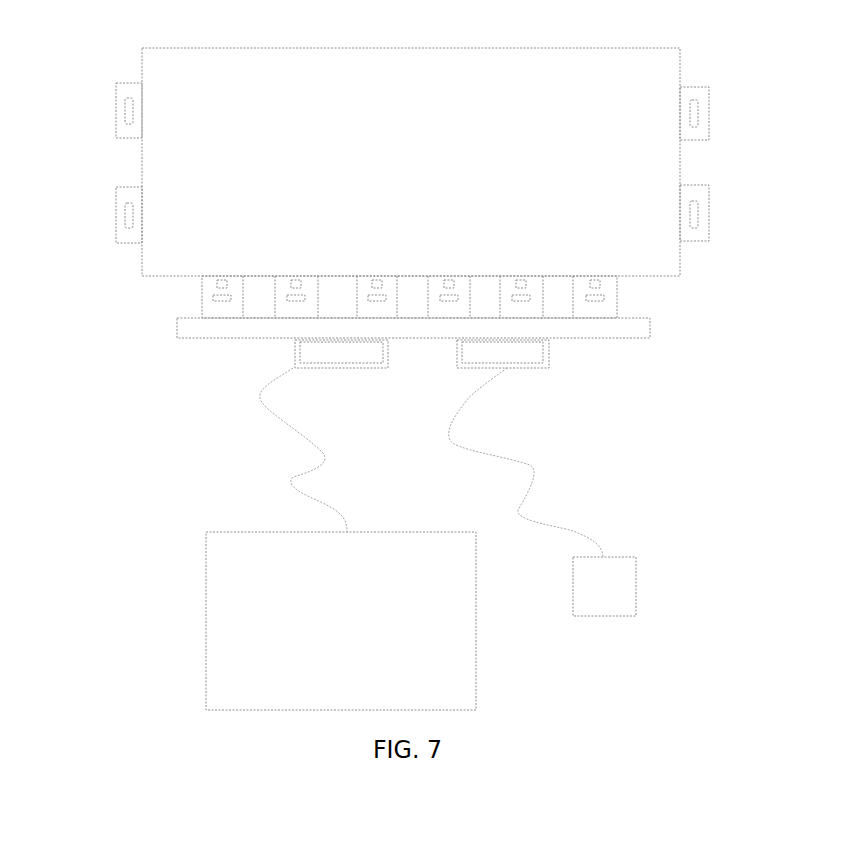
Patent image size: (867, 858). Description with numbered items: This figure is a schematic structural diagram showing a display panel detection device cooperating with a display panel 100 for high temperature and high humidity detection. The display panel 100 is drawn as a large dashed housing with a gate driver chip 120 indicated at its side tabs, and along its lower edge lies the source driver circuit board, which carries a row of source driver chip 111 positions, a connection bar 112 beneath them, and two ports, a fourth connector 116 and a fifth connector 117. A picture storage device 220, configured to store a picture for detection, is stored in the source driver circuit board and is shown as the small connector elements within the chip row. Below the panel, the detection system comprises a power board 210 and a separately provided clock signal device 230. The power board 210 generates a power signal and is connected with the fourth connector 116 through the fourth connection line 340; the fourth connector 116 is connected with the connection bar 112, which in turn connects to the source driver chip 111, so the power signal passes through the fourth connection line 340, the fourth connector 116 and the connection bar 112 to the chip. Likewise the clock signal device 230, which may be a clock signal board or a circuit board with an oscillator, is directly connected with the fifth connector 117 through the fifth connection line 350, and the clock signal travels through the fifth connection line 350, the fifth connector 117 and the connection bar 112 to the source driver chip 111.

The display panel 100 is at (138, 161).
The gate driver chip 120 is at (126, 78).
The source driver chip 111 is at (198, 298).
The connection bar 112 is at (176, 333).
The fourth connector 116 is at (295, 353).
The fifth connector 117 is at (551, 354).
The picture storage device 220 is at (604, 285).
The fourth connection line 340 is at (288, 475).
The fifth connection line 350 is at (542, 478).
The power board 210 is at (203, 617).
The clock signal device 230 is at (632, 585).